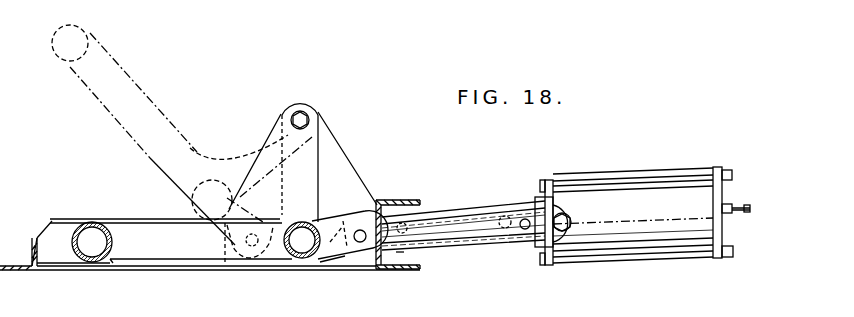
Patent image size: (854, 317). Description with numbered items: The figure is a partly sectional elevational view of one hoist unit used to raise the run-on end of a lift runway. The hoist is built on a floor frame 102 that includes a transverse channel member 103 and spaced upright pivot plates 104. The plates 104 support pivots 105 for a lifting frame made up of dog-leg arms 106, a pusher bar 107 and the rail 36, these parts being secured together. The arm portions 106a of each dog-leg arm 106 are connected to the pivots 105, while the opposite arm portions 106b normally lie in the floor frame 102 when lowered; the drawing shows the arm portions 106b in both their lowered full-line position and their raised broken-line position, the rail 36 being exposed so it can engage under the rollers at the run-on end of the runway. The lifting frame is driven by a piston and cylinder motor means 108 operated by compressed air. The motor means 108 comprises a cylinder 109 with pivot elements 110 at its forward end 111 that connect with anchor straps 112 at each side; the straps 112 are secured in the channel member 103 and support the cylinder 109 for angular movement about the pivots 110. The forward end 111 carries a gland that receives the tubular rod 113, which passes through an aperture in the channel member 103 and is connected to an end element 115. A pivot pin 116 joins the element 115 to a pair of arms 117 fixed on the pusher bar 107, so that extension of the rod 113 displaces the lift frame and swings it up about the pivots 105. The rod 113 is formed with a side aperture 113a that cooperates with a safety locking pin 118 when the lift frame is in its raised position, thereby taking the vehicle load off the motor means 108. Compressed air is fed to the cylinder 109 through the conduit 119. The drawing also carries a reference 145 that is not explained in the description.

The rail 36 is at (85, 31).
The floor frame 102 is at (53, 224).
The transverse channel member 103 is at (392, 199).
The upright pivot plates 104 is at (335, 158).
The pivots 105 is at (308, 114).
The dog-leg arms 106 is at (282, 211).
The arm portions 106a is at (288, 136).
The opposite arm portions 106b is at (117, 57).
The pusher bar 107 is at (307, 221).
The piston and cylinder motor means 108 is at (599, 161).
The cylinder 109 is at (657, 213).
The pivot elements 110 is at (563, 232).
The forward end 111 is at (548, 180).
The anchor straps 112 is at (477, 205).
The rod 113 is at (443, 238).
The side aperture 113a is at (508, 207).
The end element 115 is at (325, 262).
The pivot pin 116 is at (359, 243).
The arms 117 is at (328, 222).
The safety locking pin 118 is at (400, 252).
The conduit 119 is at (760, 193).
The pin 145 is at (525, 229).